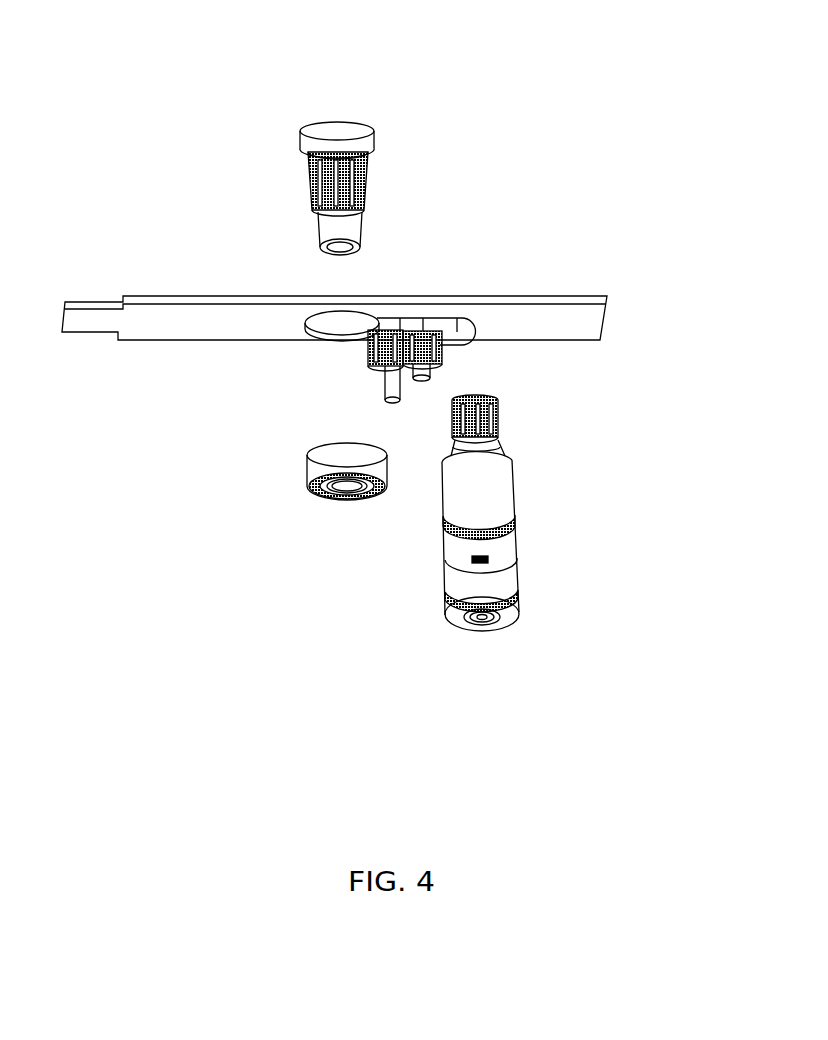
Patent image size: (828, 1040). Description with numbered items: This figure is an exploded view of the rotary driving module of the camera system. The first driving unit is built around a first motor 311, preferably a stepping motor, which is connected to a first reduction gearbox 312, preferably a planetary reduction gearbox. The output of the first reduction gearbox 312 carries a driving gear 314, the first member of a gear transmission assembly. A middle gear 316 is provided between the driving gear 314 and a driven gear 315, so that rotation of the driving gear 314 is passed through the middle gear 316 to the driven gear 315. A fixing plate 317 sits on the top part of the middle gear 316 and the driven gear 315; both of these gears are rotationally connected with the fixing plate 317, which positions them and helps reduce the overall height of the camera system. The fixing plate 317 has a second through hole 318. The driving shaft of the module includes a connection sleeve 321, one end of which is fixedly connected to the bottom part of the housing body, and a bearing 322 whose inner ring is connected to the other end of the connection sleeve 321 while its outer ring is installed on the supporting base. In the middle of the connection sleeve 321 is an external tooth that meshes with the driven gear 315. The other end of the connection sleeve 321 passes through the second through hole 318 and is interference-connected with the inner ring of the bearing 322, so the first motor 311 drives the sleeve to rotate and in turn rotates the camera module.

The first motor 311 is at (511, 593).
The first reduction gearbox 312 is at (495, 503).
The driving gear 314 is at (498, 403).
The driven gear 315 is at (395, 333).
The middle gear 316 is at (432, 335).
The fixing plate 317 is at (152, 330).
The second through hole 318 is at (342, 323).
The connection sleeve 321 is at (332, 132).
The bearing 322 is at (325, 502).